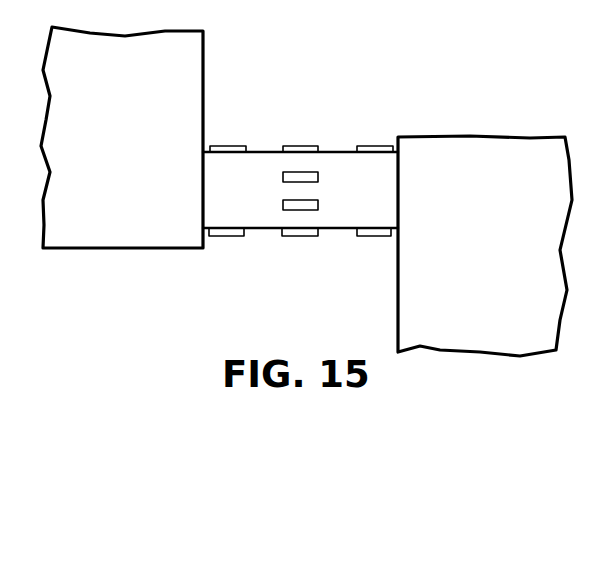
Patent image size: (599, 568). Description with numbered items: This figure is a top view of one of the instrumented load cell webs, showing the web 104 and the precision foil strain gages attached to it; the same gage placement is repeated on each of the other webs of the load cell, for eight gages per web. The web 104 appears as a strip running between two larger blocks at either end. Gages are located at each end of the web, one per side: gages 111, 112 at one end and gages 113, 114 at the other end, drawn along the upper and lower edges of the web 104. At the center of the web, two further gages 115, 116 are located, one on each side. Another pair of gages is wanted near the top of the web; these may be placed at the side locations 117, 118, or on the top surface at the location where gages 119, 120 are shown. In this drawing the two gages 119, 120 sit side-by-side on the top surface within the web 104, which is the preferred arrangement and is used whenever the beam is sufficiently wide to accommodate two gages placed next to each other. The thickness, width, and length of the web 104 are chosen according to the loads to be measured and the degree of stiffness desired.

The web 104 is at (268, 150).
The strain gage 111 is at (240, 237).
The strain gage 112 is at (222, 145).
The strain gage 113 is at (380, 237).
The strain gage 114 is at (383, 148).
The strain gage 115 is at (292, 238).
The strain gage 116 is at (330, 117).
The strain gage location 117 is at (294, 260).
The strain gage location 118 is at (311, 145).
The strain gage 119 is at (318, 205).
The strain gage 120 is at (318, 176).